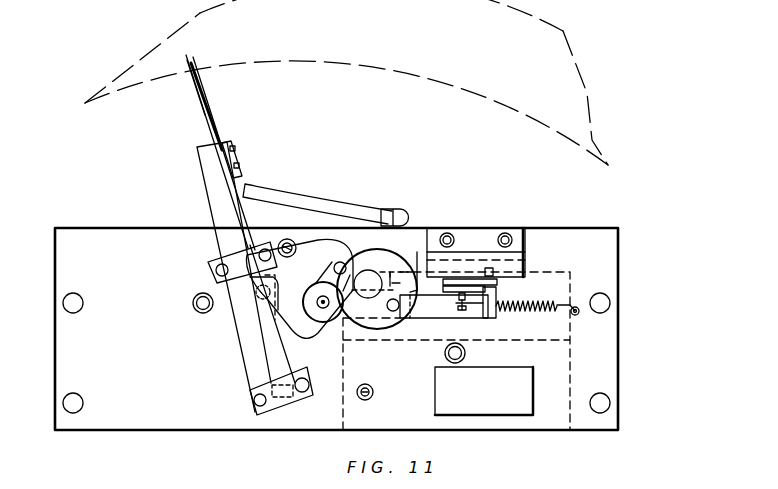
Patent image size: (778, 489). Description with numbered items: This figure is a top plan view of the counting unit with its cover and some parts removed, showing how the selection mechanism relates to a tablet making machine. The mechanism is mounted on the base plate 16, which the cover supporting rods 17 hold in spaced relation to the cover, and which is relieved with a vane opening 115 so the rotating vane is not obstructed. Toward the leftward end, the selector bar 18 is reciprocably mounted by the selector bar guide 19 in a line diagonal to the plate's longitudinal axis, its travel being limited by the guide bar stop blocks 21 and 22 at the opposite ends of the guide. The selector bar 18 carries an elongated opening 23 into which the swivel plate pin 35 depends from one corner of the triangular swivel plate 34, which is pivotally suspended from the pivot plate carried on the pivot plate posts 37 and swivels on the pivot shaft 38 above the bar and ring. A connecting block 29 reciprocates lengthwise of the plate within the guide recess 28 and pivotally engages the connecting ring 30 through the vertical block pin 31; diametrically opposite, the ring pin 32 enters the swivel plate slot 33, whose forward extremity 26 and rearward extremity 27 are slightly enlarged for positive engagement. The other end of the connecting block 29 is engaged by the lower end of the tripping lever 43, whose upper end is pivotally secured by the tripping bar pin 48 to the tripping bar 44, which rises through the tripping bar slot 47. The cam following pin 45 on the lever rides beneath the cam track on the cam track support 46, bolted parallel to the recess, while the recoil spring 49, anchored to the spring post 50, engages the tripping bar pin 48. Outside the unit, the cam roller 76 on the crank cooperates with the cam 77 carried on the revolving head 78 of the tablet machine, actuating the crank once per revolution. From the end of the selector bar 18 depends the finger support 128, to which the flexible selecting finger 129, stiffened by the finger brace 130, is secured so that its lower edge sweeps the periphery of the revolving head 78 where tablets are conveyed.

The base plate 16 is at (145, 363).
The cover supporting rods 17 is at (192, 303).
The selector bar 18 is at (220, 197).
The selector bar guide 19 is at (235, 369).
The guide bar stop block 21 is at (267, 265).
The guide bar stop block 22 is at (298, 388).
The elongated opening 23 is at (250, 298).
The forward extremity 26 is at (324, 256).
The rearward extremity 27 is at (303, 336).
The guide recess 28 is at (495, 315).
The connecting block 29 is at (453, 315).
The connecting ring 30 is at (382, 327).
The vertical block pin 31 is at (395, 311).
The ring pin 32 is at (353, 247).
The swivel plate slot 33 is at (318, 322).
The triangular swivel plate 34 is at (262, 303).
The swivel plate pin 35 is at (257, 290).
The pivot plate posts 37 is at (291, 243).
The pivot shaft 38 is at (318, 297).
The tripping lever 43 is at (497, 283).
The tripping bar 44 is at (482, 298).
The cam following pin 45 is at (493, 272).
The cam track support 46 is at (528, 240).
The tripping bar slot 47 is at (411, 263).
The tripping bar pin 48 is at (458, 305).
The recoil spring 49 is at (550, 316).
The spring post 50 is at (578, 305).
The cam roller 76 is at (413, 217).
The cam 77 is at (292, 202).
The revolving head 78 is at (537, 107).
The vane opening 115 is at (513, 403).
The finger support 128 is at (231, 157).
The selecting finger 129 is at (203, 107).
The finger brace 130 is at (215, 110).